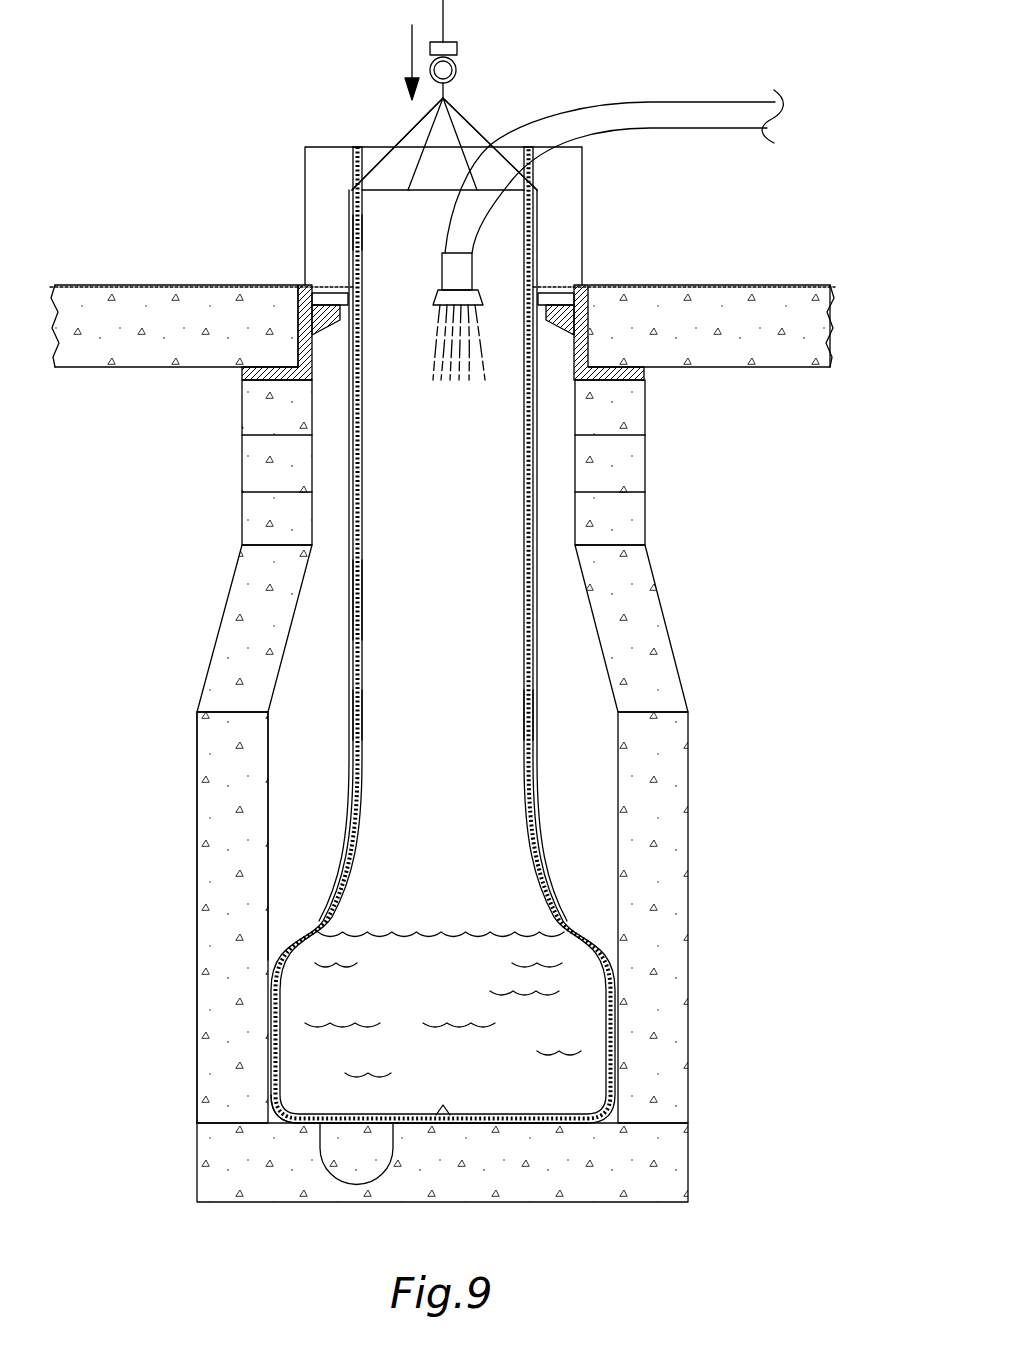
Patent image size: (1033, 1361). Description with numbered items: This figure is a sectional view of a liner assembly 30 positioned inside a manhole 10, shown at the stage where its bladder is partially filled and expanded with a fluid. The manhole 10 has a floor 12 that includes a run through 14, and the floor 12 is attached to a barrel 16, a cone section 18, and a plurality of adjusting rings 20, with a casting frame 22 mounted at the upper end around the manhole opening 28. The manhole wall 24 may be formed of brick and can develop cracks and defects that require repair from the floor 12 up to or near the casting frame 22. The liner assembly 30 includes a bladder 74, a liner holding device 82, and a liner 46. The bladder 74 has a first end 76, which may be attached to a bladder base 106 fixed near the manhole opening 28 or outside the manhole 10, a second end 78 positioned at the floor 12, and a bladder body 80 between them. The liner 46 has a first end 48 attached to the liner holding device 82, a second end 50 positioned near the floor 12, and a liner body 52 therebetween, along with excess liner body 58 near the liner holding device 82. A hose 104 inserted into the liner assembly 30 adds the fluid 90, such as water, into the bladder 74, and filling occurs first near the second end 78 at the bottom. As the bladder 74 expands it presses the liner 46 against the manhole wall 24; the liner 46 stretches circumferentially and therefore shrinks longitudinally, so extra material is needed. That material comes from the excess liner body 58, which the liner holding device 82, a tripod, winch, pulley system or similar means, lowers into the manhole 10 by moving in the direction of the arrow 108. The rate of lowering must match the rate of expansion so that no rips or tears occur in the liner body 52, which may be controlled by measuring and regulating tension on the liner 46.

The manhole 10 is at (553, 94).
The floor 12 is at (678, 1163).
The run through 14 is at (357, 1152).
The barrel 16 is at (680, 865).
The cone section 18 is at (652, 610).
The adjusting rings 20 is at (630, 428).
The casting frame 22 is at (583, 287).
The manhole wall 24 is at (268, 810).
The manhole opening 28 is at (330, 289).
The liner assembly 30 is at (509, 90).
The liner 46 is at (350, 712).
The first end of the liner 48 is at (355, 192).
The second end of the liner 50 is at (270, 1123).
The liner body 52 is at (538, 712).
The excess liner body 58 is at (349, 231).
The bladder 74 is at (362, 679).
The first end of the bladder 76 is at (357, 148).
The second end of the bladder 78 is at (528, 1117).
The bladder body 80 is at (362, 604).
The liner holding device 82 is at (448, 42).
The fluid 90 is at (437, 330).
The hose 104 is at (668, 117).
The bladder base 106 is at (584, 168).
The arrow 108 is at (408, 47).